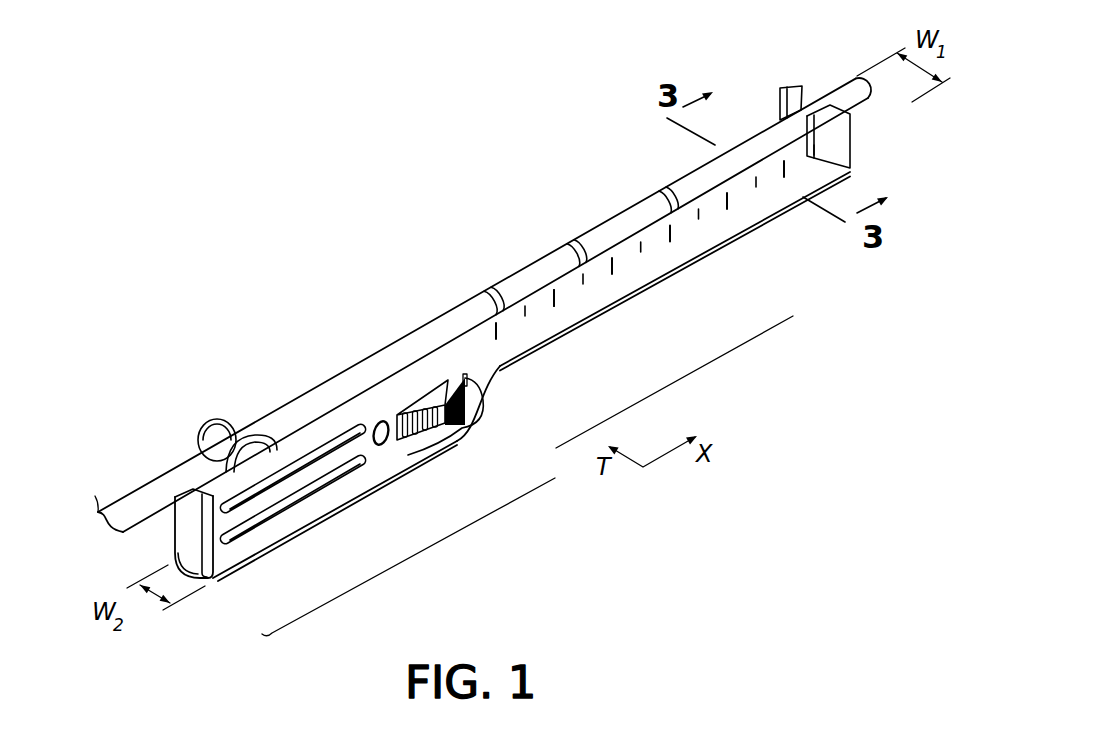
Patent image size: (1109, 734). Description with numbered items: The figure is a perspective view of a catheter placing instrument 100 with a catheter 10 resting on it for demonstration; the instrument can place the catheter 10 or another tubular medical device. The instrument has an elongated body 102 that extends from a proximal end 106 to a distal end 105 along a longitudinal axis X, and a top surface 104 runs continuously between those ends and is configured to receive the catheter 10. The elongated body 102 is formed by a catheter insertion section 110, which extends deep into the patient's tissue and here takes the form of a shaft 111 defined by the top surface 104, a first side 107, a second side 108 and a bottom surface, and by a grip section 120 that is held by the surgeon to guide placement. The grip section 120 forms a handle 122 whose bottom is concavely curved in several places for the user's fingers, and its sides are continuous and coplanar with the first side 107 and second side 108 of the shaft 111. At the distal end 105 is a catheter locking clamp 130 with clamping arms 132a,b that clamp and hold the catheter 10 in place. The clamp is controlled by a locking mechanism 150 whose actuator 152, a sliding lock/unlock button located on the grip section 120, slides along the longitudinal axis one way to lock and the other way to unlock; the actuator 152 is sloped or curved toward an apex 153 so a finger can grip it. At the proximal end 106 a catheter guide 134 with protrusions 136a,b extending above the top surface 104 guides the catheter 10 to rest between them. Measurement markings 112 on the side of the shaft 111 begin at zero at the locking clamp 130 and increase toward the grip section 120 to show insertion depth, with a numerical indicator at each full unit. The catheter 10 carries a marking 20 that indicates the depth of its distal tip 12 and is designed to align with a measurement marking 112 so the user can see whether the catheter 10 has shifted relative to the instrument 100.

The catheter 10 is at (130, 470).
The distal tip 12 is at (874, 108).
The marking 20 is at (487, 292).
The catheter placing instrument 100 is at (490, 190).
The elongated body 102 is at (600, 210).
The top surface 104 is at (392, 343).
The distal end 105 is at (858, 128).
The proximal end 106 is at (160, 553).
The first side 107 is at (694, 242).
The second side 108 is at (315, 388).
The catheter insertion section 110 is at (790, 312).
The shaft 111 is at (560, 340).
The measurement markings 112 is at (630, 277).
The grip section 120 is at (552, 468).
The handle 122 is at (298, 522).
The catheter locking clamp 130 is at (850, 155).
The clamping arms 132a,b is at (830, 103).
The catheter guide 134 is at (223, 403).
The protrusions 136a,b is at (230, 450).
The locking mechanism 150 is at (560, 440).
The actuator 152 is at (440, 441).
The apex 153 is at (474, 432).